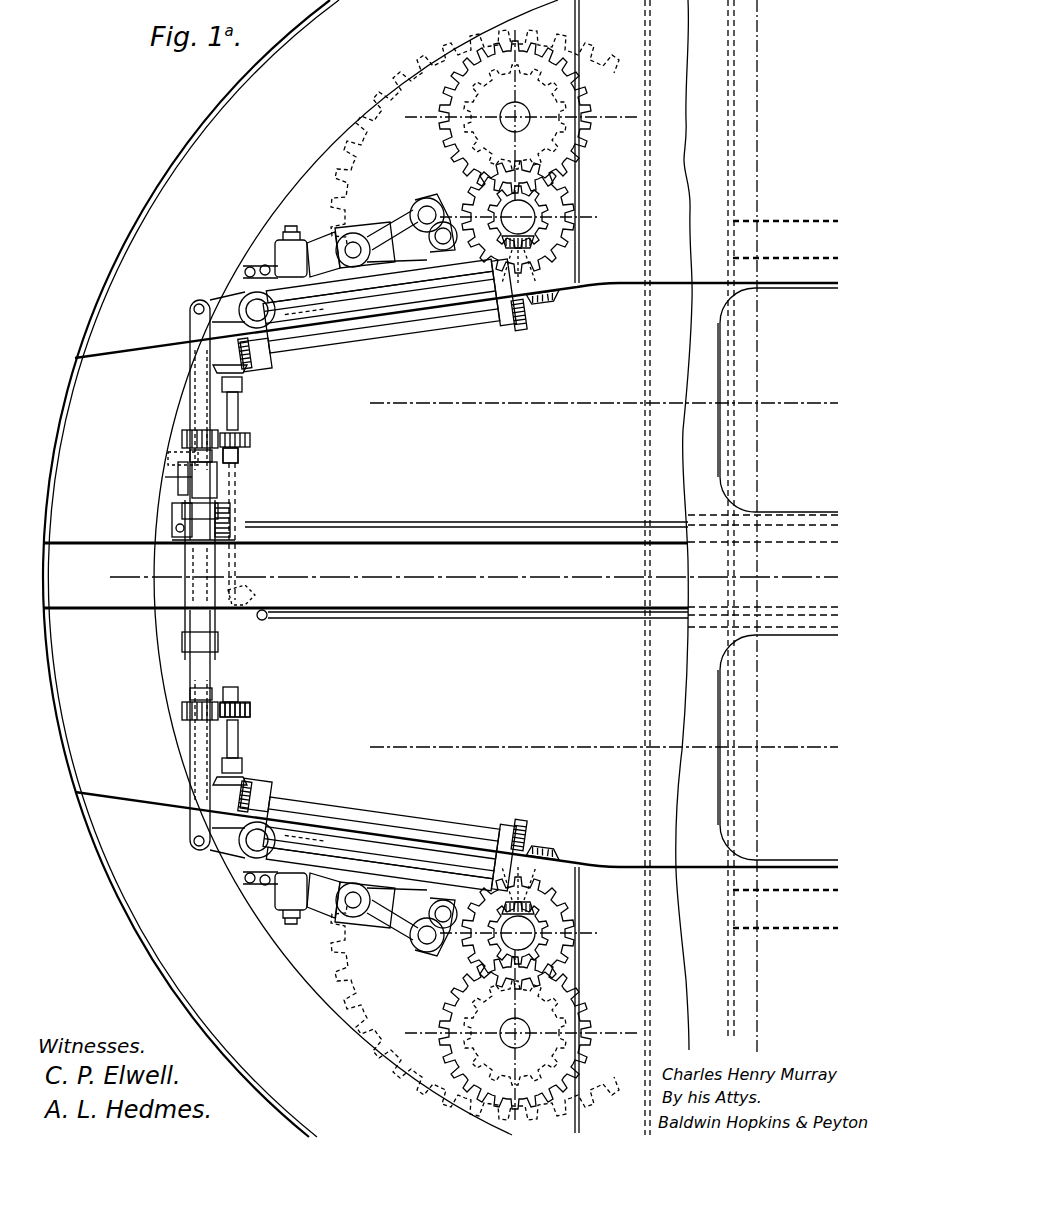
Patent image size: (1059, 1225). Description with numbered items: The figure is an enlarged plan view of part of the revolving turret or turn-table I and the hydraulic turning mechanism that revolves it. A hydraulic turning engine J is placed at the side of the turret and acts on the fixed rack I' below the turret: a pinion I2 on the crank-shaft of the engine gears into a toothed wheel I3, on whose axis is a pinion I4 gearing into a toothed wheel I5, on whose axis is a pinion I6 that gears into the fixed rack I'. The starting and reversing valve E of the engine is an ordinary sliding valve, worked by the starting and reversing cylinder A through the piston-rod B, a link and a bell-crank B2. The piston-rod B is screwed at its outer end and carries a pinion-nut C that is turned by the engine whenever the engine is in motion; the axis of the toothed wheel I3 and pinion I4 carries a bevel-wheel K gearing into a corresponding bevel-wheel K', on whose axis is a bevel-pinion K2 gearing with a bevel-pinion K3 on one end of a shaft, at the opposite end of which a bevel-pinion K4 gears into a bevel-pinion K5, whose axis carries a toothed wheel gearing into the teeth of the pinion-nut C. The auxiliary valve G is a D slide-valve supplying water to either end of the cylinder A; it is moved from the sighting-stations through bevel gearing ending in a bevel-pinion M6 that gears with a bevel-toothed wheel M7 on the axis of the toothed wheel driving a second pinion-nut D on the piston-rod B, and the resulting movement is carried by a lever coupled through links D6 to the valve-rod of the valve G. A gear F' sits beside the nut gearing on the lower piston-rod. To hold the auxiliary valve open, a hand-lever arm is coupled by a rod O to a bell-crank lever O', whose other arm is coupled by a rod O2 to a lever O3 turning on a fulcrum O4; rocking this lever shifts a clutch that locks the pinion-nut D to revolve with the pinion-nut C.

The starting and reversing cylinder A is at (365, 580).
The piston-rod B is at (209, 575).
The bell-crank B2 is at (248, 278).
The pinion-nut C is at (182, 436).
The pinion-nut D is at (217, 480).
The link D6 is at (178, 482).
The starting and reversing valve E is at (307, 576).
The gear F' is at (250, 712).
The auxiliary valve G is at (172, 515).
The turret or turn-table I is at (356, 567).
The fixed rack I' is at (475, 575).
The pinion I2 is at (446, 190).
The toothed wheel I3 is at (572, 188).
The pinion I4 is at (548, 204).
The toothed wheel I5 is at (578, 127).
The pinion I6 is at (538, 95).
The hydraulic turning engine J is at (381, 574).
The bevel-wheel K is at (557, 577).
The bevel-wheel K' is at (559, 575).
The bevel-pinion K2 is at (560, 300).
The bevel-pinion K3 is at (527, 323).
The bevel-pinion K4 is at (250, 372).
The bevel-pinion K5 is at (222, 372).
The bevel-pinion M6 is at (230, 515).
The bevel-toothed wheel M7 is at (176, 530).
The rod O is at (472, 625).
The bell-crank lever O' is at (259, 596).
The rod O2 is at (238, 493).
The lever O3 is at (240, 458).
The fulcrum O4 is at (168, 458).